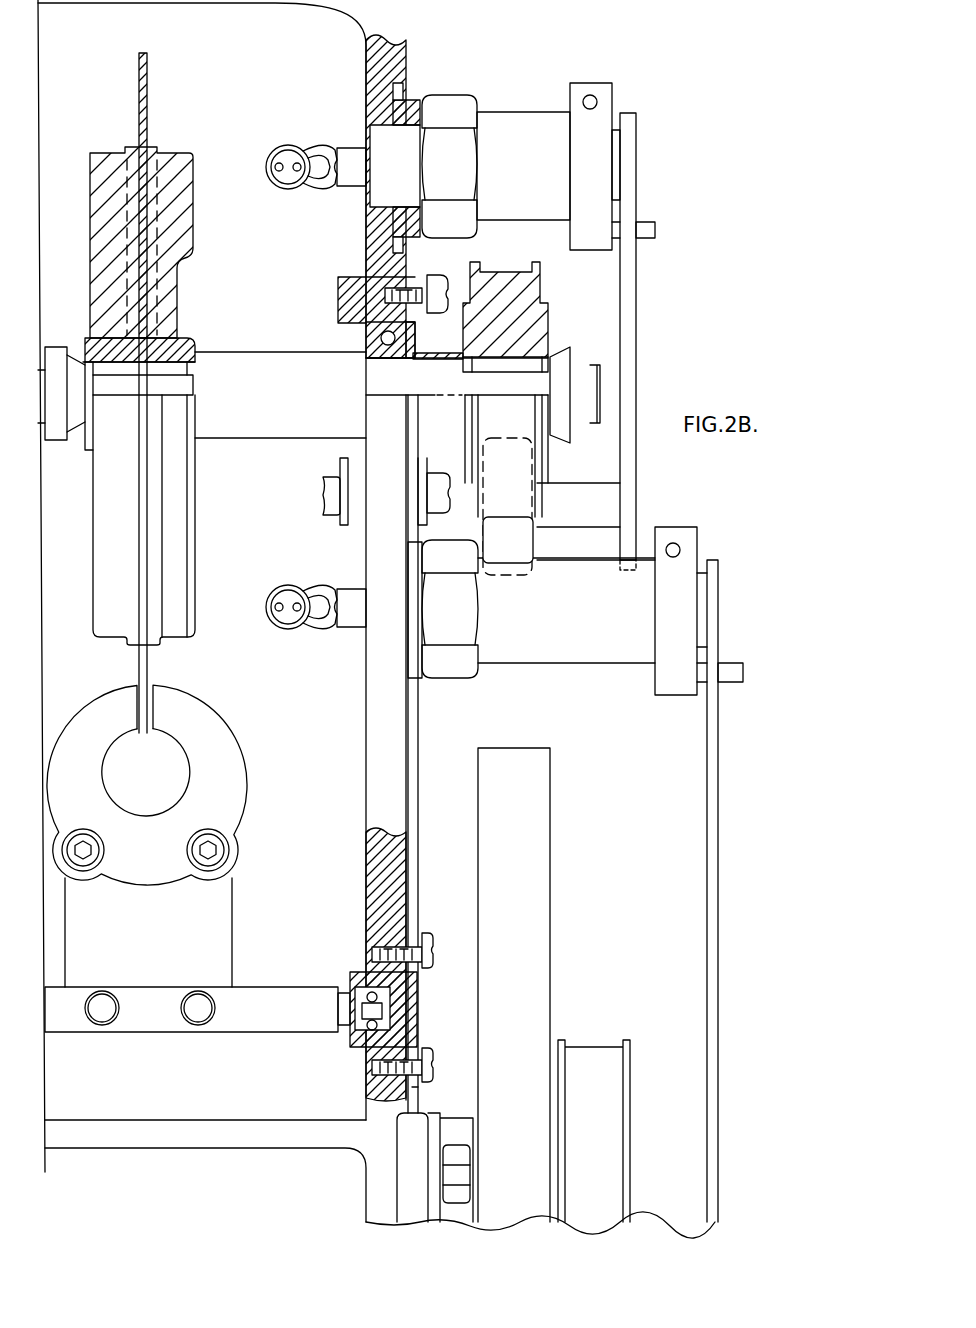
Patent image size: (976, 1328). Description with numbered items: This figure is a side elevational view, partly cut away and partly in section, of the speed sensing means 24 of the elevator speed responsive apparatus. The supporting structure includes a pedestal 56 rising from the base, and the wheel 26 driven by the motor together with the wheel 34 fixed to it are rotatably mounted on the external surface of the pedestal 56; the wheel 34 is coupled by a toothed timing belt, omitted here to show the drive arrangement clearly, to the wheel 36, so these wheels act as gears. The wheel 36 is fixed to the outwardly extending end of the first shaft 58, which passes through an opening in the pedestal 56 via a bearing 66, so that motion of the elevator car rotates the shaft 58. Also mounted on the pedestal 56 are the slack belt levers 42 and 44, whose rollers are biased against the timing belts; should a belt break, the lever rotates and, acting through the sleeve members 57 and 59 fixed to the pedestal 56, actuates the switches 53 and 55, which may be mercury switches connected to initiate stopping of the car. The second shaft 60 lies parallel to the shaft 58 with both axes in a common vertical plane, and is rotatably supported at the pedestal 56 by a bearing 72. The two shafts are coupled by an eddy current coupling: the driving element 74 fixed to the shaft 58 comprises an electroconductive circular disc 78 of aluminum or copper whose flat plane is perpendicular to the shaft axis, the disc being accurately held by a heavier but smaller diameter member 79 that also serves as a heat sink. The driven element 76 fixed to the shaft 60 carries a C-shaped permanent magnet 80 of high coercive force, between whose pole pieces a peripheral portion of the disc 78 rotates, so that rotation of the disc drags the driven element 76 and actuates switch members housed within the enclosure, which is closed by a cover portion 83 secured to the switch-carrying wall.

The speed sensing means 24 is at (279, 1185).
The wheel 26 is at (597, 1058).
The wheel 34 is at (550, 842).
The wheel 36 is at (543, 291).
The slack belt lever 42 is at (718, 842).
The slack belt lever 44 is at (636, 295).
The switch 53 is at (267, 611).
The switch 55 is at (266, 164).
The pedestal 56 is at (372, 802).
The sleeve member 57 is at (578, 655).
The first shaft 58 is at (278, 430).
The sleeve member 59 is at (527, 122).
The second shaft 60 is at (287, 1022).
The bearing 66 is at (364, 337).
The bearing 72 is at (350, 975).
The driving element 74 is at (90, 213).
The driven element 76 is at (281, 899).
The disc member 78 is at (147, 89).
The member 79 is at (178, 152).
The magnet 80 is at (243, 753).
The cover portion 83 is at (265, 3).